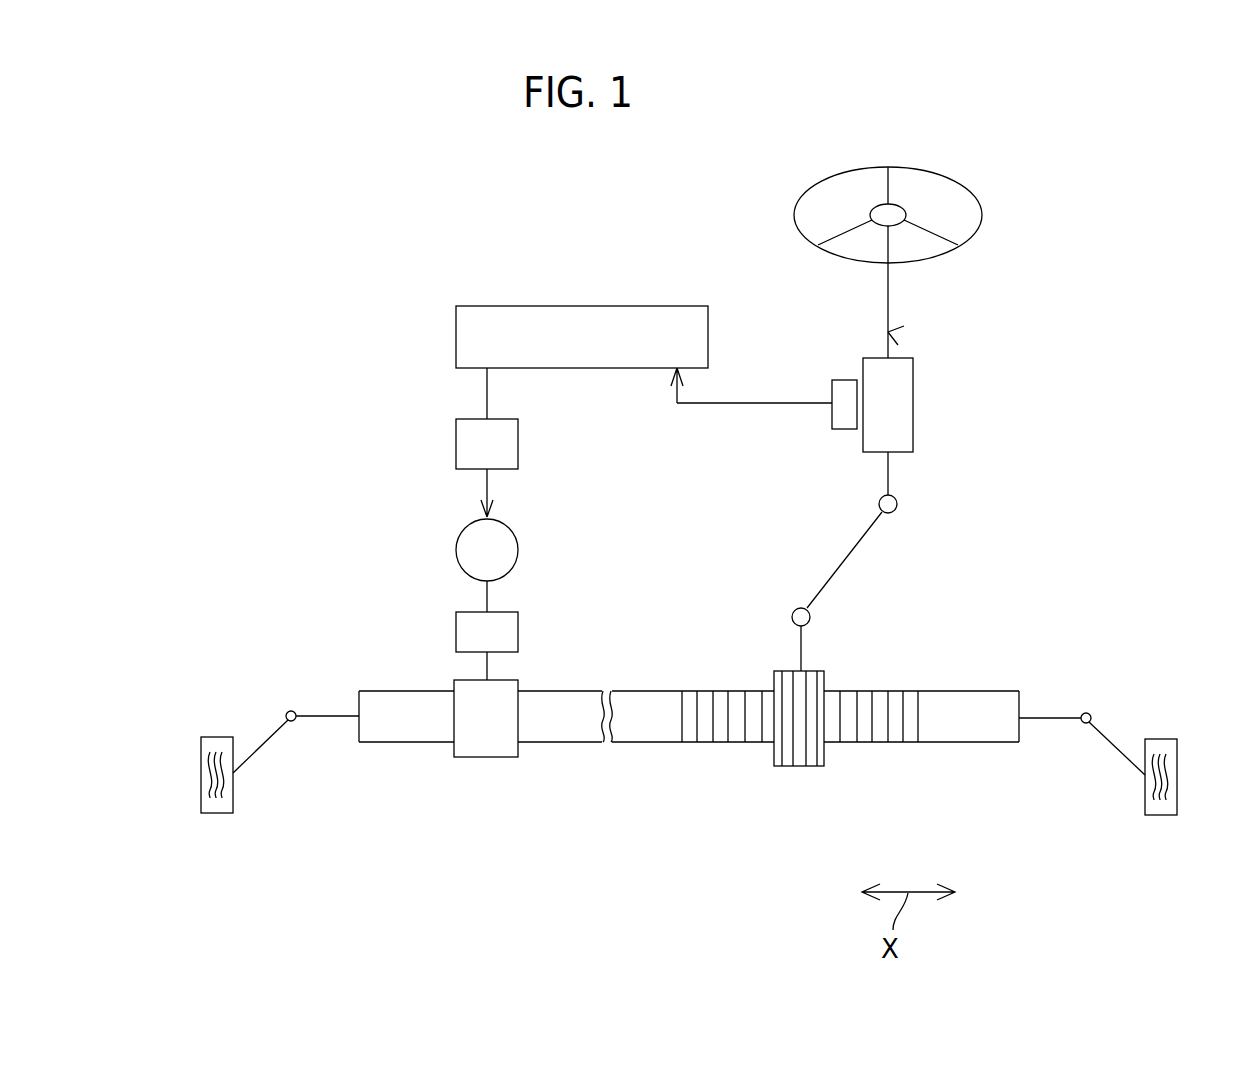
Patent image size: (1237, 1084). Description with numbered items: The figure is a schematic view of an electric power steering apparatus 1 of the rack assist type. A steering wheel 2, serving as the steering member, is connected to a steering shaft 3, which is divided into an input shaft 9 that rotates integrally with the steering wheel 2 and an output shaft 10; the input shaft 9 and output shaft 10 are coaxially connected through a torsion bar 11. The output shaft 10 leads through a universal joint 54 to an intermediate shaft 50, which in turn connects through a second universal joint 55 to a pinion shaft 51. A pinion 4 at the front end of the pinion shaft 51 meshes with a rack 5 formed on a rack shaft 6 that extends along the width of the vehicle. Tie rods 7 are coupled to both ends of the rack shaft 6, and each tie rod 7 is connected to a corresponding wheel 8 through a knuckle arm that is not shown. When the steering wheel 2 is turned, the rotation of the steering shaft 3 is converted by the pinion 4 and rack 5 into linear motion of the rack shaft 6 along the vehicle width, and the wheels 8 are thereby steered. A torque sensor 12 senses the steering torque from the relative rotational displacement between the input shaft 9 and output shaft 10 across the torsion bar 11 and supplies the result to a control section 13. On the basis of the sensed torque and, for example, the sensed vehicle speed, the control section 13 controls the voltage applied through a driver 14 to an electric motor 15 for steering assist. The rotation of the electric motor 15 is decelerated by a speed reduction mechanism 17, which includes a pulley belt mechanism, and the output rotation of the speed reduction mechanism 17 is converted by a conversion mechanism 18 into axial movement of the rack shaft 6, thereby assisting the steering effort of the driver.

The electric power steering apparatus 1 is at (1075, 380).
The steering wheel 2 is at (917, 168).
The steering shaft 3 is at (892, 336).
The pinion 4 is at (810, 766).
The rack 5 is at (738, 742).
The rack shaft 6 is at (956, 742).
The tie rod 7 is at (268, 740).
The wheel 8 is at (215, 813).
The input shaft 9 is at (888, 307).
The output shaft 10 is at (888, 470).
The torsion bar 11 is at (908, 410).
The torque sensor 12 is at (845, 380).
The control section 13 is at (502, 306).
The driver 14 is at (456, 445).
The electric motor 15 is at (456, 548).
The speed reduction mechanism 17 is at (456, 628).
The conversion mechanism 18 is at (487, 757).
The intermediate shaft 50 is at (846, 560).
The pinion shaft 51 is at (801, 648).
The universal joint 54 is at (897, 505).
The universal joint 55 is at (792, 614).